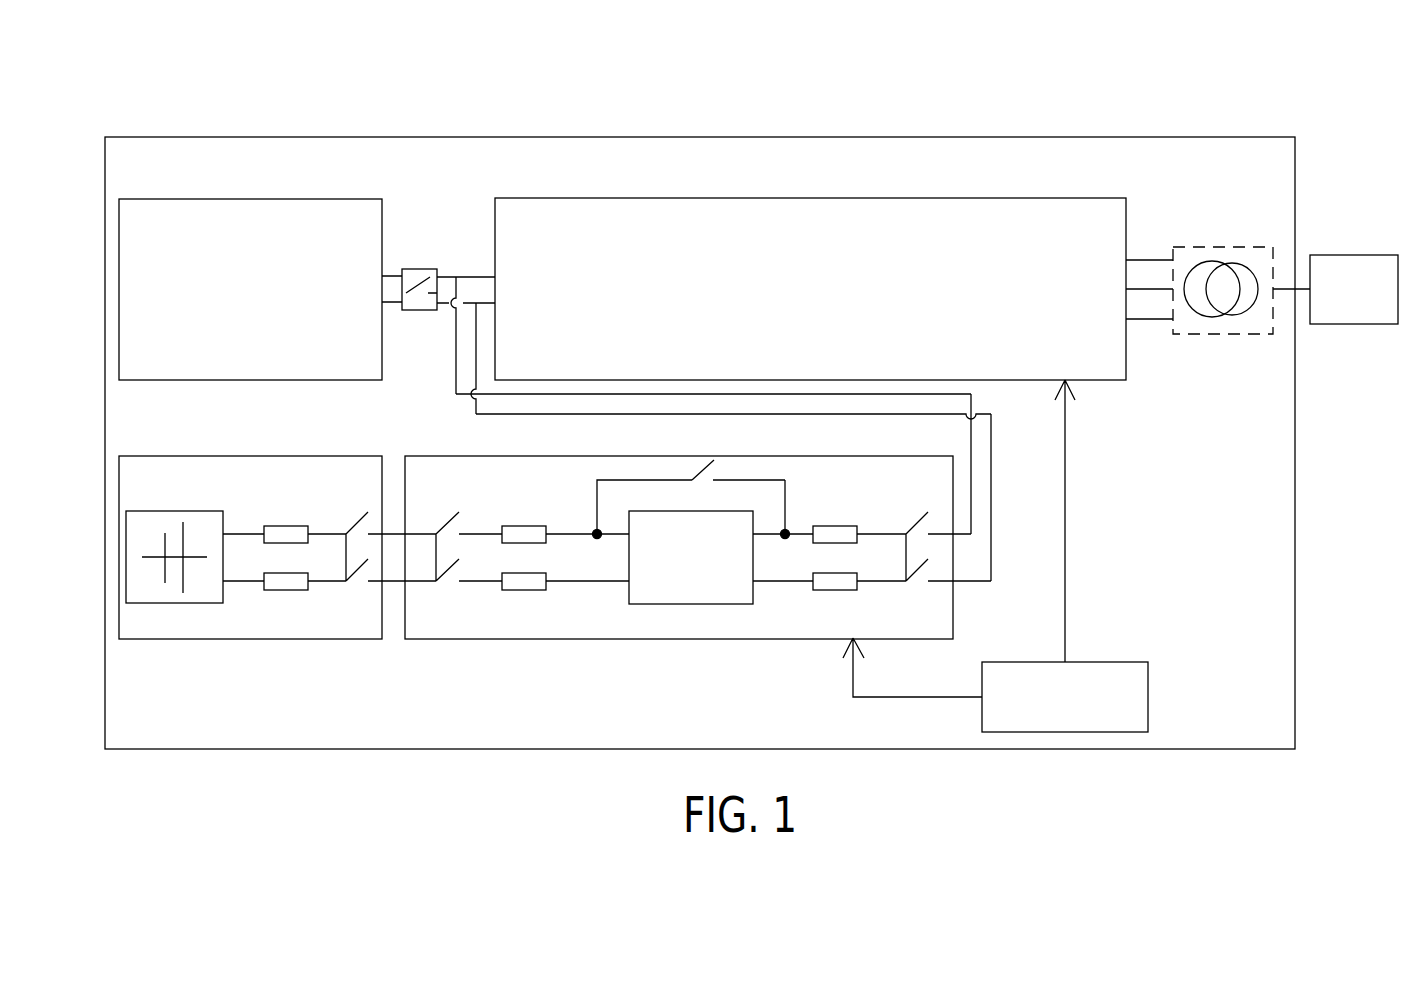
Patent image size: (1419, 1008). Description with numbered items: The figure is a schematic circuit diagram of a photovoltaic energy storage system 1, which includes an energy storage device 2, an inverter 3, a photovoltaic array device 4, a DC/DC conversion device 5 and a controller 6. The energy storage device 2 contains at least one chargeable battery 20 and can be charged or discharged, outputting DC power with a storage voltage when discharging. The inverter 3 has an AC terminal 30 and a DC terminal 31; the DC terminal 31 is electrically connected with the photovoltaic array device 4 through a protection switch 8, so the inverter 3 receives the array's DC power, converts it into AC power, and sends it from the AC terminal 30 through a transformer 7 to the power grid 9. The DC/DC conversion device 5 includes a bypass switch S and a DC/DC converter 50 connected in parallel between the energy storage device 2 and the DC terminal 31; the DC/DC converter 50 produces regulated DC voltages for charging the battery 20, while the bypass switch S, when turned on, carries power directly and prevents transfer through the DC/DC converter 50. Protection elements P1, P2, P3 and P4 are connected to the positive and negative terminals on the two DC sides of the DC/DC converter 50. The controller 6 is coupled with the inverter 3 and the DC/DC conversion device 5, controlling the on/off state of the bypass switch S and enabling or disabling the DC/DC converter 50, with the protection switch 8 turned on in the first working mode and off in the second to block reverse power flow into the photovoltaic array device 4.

The photovoltaic energy storage system 1 is at (1089, 137).
The energy storage device 2 is at (262, 521).
The chargeable battery 20 is at (183, 511).
The inverter 3 is at (820, 198).
The AC terminal 30 is at (1126, 319).
The DC terminal 31 is at (495, 303).
The photovoltaic array device 4 is at (243, 199).
The DC/DC conversion device 5 is at (698, 527).
The DC/DC converter 50 is at (753, 598).
The controller 6 is at (1122, 662).
The transformer 7 is at (1232, 247).
The protection switch 8 is at (412, 269).
The power grid 9 is at (1362, 255).
The bypass switch S is at (701, 452).
The protection element P1 is at (524, 517).
The protection element P2 is at (524, 601).
The protection element P3 is at (835, 517).
The protection element P4 is at (835, 601).